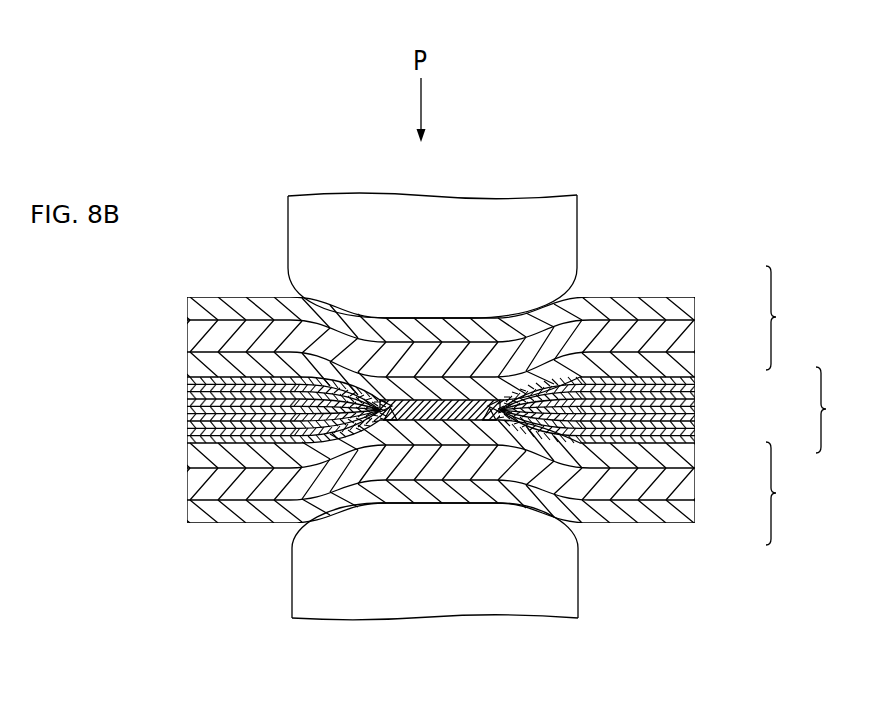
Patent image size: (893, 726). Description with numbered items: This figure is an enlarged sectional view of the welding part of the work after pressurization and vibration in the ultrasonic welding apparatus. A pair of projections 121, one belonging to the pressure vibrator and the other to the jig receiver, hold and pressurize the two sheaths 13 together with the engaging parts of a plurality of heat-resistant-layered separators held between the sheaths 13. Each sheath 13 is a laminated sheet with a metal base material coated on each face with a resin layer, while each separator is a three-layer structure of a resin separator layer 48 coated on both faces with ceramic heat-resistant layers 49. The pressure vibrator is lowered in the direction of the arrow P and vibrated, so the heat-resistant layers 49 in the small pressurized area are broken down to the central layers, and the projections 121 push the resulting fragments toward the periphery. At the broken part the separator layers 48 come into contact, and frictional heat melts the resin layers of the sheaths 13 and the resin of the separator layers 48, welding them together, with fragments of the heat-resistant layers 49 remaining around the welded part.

The projection 121 is at (568, 231).
The sheath 13 is at (785, 405).
The heat-resistant layer 49 is at (696, 378).
The separator layer 48 is at (696, 390).